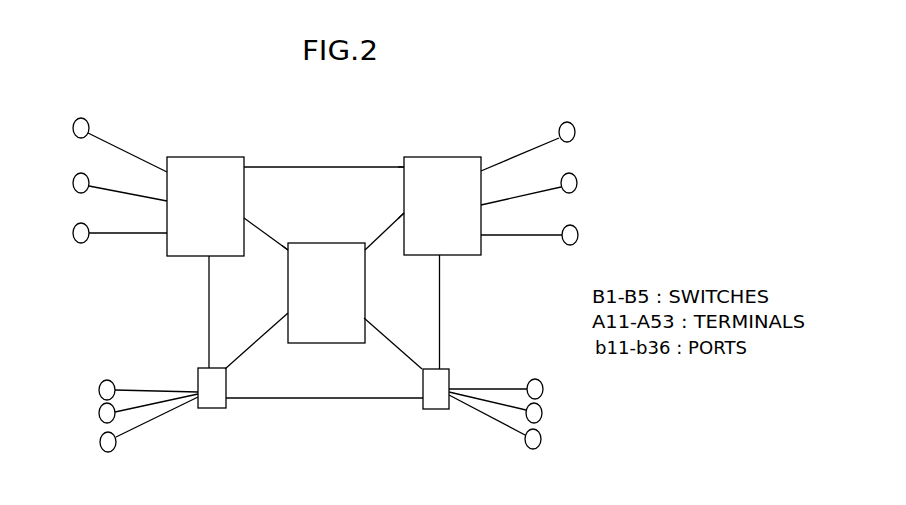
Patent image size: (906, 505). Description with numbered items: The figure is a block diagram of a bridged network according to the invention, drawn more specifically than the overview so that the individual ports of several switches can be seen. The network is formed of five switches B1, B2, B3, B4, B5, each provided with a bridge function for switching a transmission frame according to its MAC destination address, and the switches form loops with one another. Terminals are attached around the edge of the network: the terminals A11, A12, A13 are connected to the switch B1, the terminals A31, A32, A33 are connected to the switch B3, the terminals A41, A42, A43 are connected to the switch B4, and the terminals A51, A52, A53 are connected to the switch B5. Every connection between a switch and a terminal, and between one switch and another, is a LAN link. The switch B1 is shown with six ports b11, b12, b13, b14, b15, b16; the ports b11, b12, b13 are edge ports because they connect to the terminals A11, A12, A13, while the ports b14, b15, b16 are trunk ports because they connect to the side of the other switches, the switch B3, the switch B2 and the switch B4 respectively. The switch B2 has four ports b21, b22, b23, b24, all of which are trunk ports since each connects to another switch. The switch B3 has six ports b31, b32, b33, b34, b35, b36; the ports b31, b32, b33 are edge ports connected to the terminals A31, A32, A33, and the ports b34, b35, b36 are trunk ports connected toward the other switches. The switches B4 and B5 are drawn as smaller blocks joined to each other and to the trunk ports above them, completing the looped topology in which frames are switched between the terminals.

The switch B1 is at (205, 192).
The switch B2 is at (326, 278).
The switch B3 is at (442, 191).
The switch B4 is at (310, 401).
The switch B5 is at (436, 402).
The terminal A11 is at (64, 130).
The terminal A12 is at (64, 183).
The terminal A13 is at (64, 233).
The terminal A31 is at (585, 132).
The terminal A32 is at (586, 183).
The terminal A33 is at (587, 235).
The terminal A41 is at (133, 390).
The terminal A42 is at (133, 410).
The terminal A43 is at (133, 425).
The terminal A51 is at (512, 390).
The terminal A52 is at (512, 409).
The terminal A53 is at (512, 423).
The port b11 is at (144, 157).
The port b12 is at (145, 198).
The port b13 is at (144, 231).
The port b14 is at (308, 172).
The port b15 is at (252, 230).
The port b16 is at (209, 302).
The port b21 is at (302, 256).
The port b22 is at (273, 337).
The port b23 is at (369, 240).
The port b24 is at (378, 337).
The port b31 is at (506, 157).
The port b32 is at (507, 198).
The port b33 is at (507, 233).
The port b34 is at (416, 172).
The port b35 is at (416, 215).
The port b36 is at (437, 302).